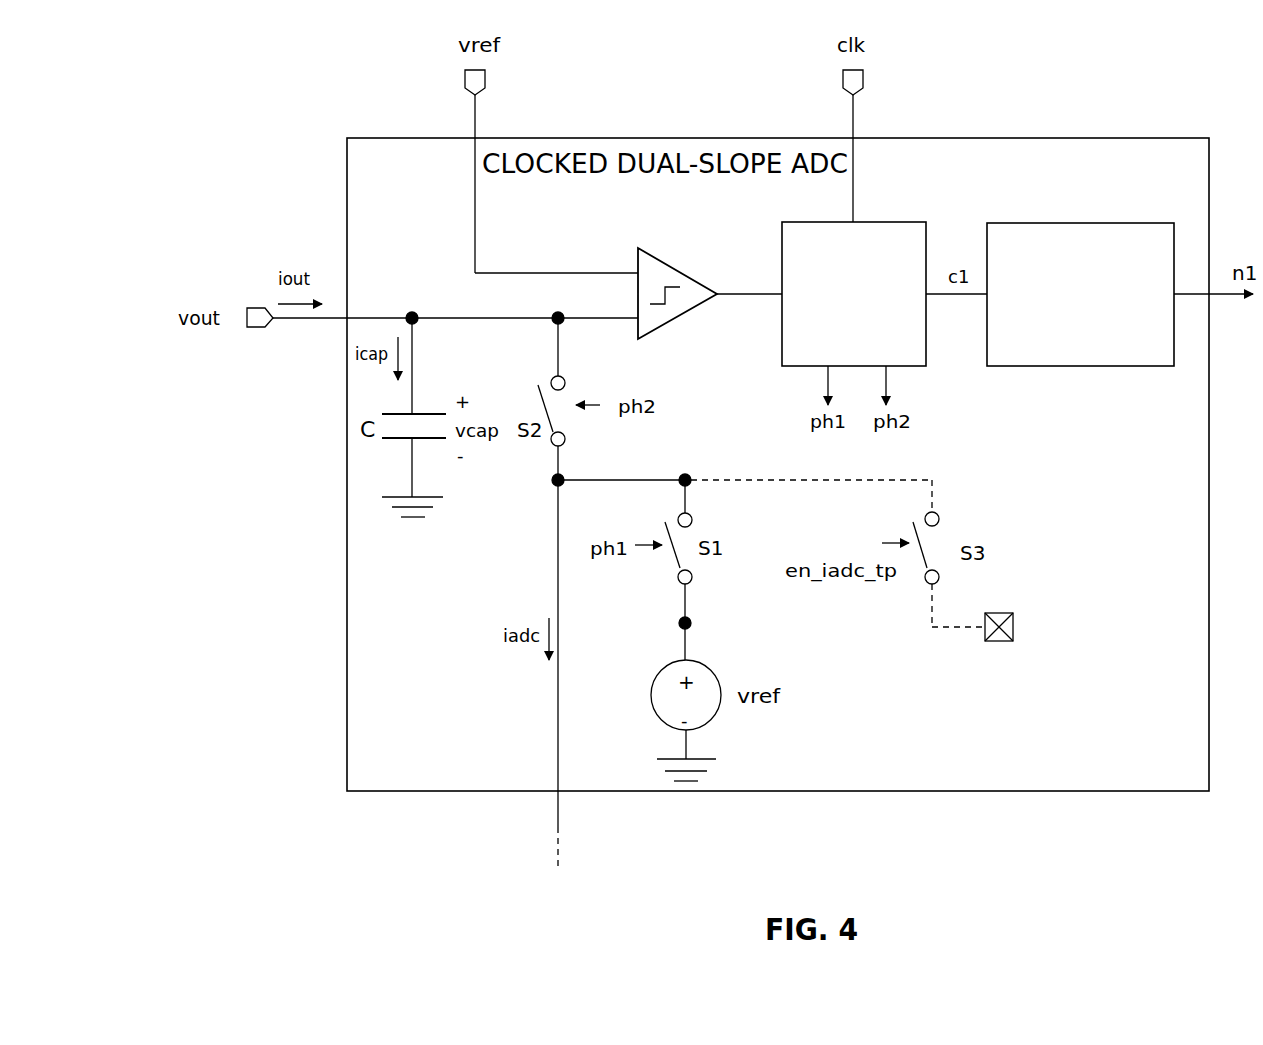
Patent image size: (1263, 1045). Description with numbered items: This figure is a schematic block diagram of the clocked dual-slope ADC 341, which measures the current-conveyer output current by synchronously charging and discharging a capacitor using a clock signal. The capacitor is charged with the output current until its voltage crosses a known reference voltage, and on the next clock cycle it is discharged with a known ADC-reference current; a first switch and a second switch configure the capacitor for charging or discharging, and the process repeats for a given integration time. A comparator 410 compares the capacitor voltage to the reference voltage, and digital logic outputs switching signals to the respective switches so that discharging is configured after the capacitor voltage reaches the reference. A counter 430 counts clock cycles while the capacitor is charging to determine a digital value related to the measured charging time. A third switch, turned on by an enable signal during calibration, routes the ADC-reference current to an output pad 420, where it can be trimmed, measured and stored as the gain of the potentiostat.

The clocked dual-slope ADC 341 is at (690, 219).
The comparator 410 is at (712, 260).
The output pad 420 is at (878, 351).
The counter 430 is at (1105, 331).